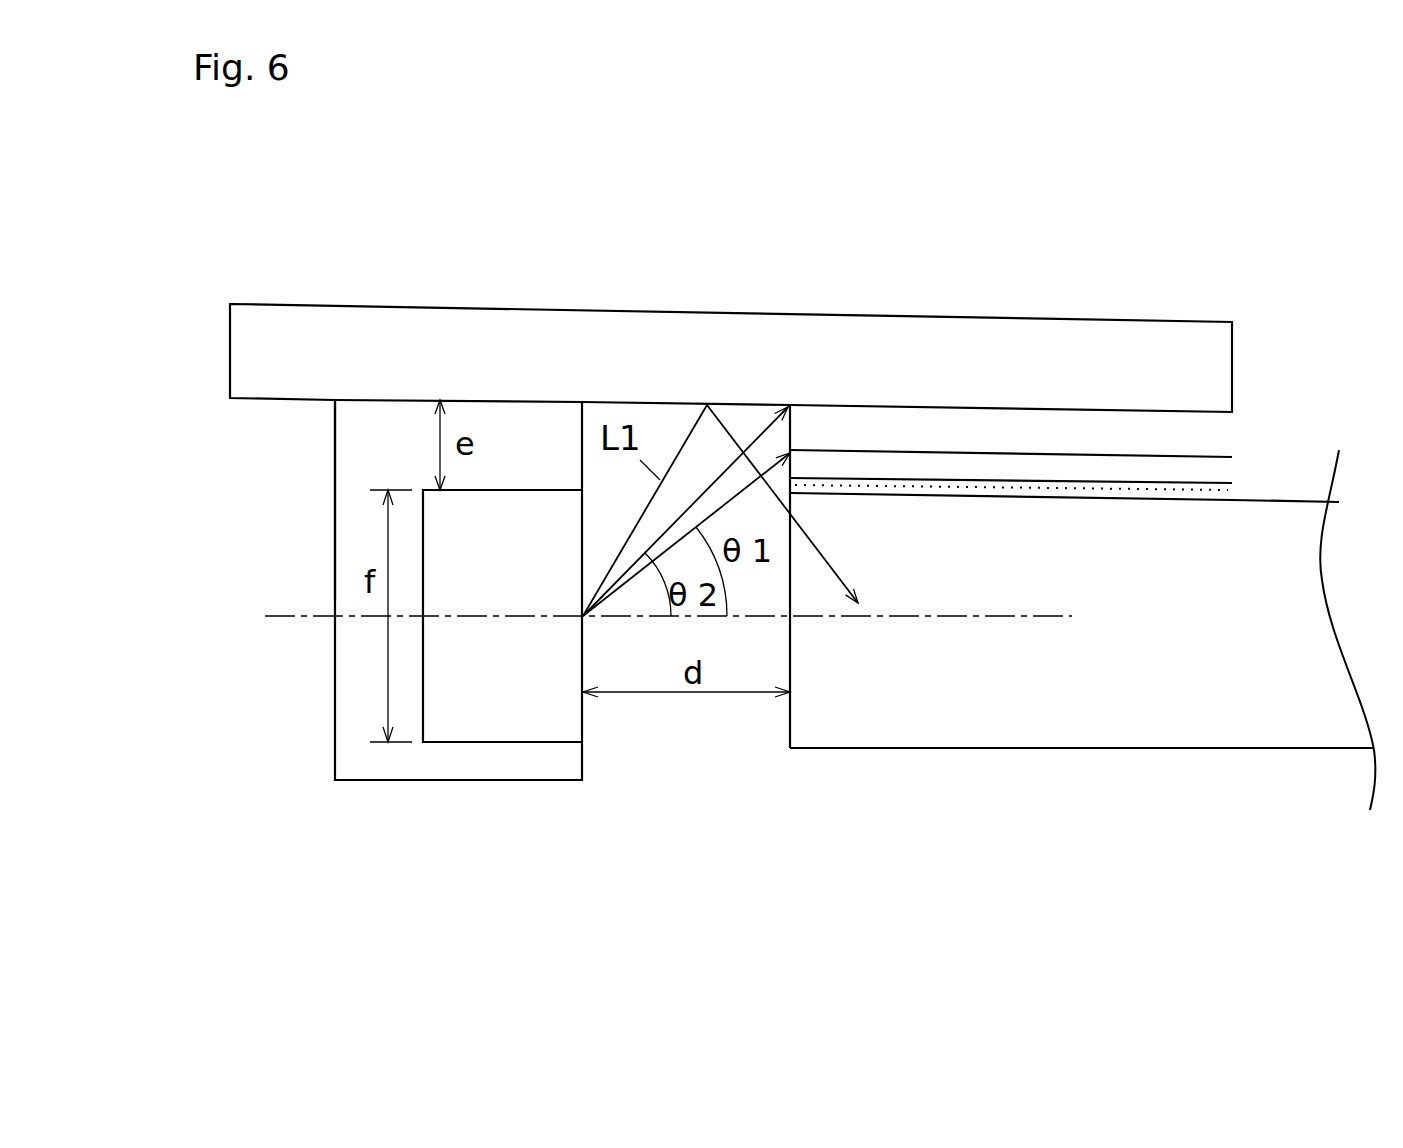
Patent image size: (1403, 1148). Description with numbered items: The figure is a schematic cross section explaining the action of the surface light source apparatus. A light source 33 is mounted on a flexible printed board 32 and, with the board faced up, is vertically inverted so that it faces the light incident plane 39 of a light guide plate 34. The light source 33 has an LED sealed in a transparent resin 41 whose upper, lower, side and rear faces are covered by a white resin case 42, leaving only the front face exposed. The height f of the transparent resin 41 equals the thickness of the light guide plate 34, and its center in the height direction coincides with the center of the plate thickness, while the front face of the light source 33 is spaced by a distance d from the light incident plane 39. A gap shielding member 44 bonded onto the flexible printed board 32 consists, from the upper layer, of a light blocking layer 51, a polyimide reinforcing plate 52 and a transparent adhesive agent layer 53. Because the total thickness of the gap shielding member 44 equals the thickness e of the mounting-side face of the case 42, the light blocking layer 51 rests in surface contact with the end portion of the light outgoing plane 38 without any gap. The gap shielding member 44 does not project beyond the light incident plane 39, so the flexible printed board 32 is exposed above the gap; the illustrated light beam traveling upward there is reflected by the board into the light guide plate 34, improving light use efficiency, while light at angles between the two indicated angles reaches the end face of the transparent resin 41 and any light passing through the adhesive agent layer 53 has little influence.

The flexible printed board 32 is at (523, 360).
The light source 33 is at (335, 697).
The light guide plate 34 is at (1083, 715).
The light outgoing plane 38 is at (1290, 500).
The light incident plane 39 is at (790, 705).
The transparent resin 41 is at (500, 720).
The case 42 is at (353, 455).
The gap shielding member 44 is at (1011, 317).
The light blocking layer 51 is at (1045, 490).
The reinforcing plate 52 is at (983, 467).
The adhesive agent layer 53 is at (915, 430).